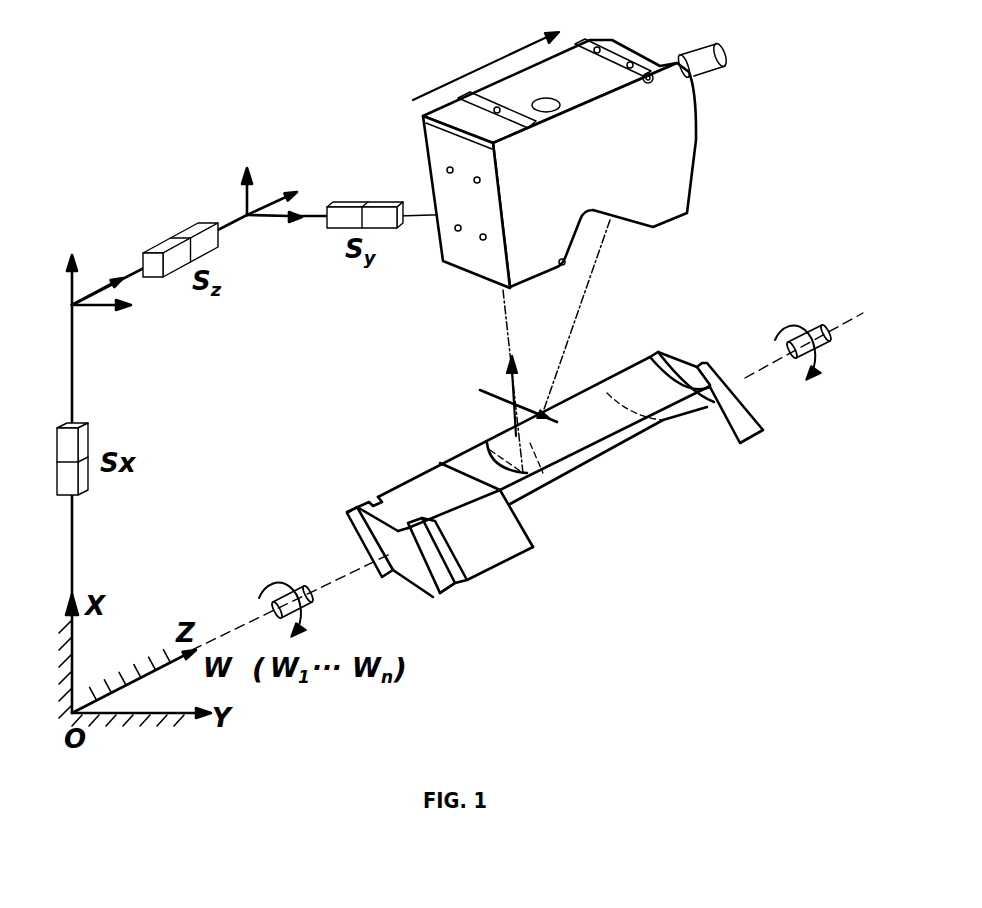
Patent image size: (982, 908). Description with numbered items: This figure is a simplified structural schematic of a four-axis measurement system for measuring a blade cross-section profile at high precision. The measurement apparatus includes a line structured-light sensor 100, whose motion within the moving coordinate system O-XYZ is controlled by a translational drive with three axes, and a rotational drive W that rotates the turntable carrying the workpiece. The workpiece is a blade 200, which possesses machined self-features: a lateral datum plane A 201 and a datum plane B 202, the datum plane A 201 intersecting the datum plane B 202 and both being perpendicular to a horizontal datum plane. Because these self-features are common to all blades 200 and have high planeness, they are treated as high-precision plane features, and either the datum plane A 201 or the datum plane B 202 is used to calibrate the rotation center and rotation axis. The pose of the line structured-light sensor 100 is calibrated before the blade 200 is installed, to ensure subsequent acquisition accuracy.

The line structured-light sensor 100 is at (450, 143).
The blade 200 is at (673, 418).
The lateral datum plane A 201 is at (405, 502).
The datum plane B 202 is at (495, 547).